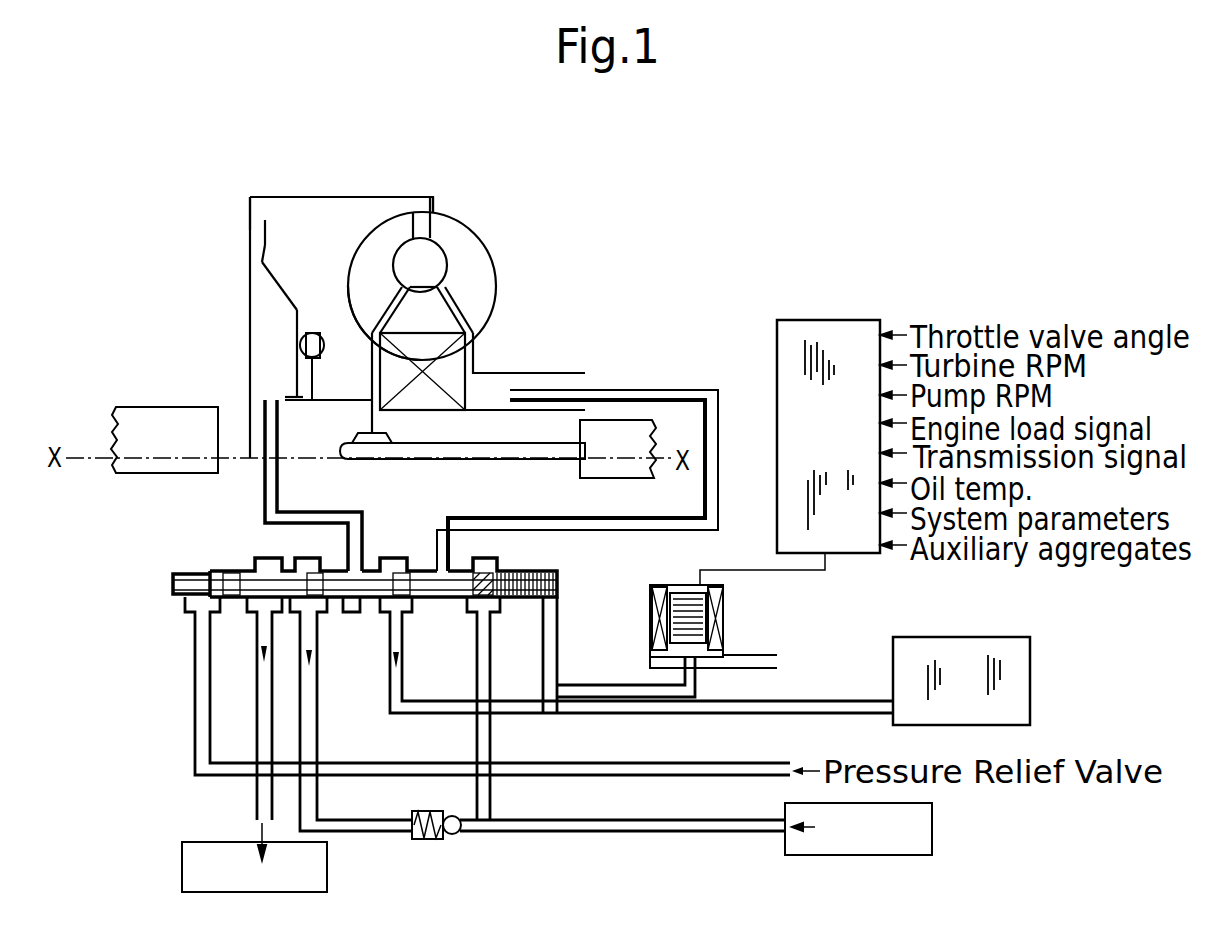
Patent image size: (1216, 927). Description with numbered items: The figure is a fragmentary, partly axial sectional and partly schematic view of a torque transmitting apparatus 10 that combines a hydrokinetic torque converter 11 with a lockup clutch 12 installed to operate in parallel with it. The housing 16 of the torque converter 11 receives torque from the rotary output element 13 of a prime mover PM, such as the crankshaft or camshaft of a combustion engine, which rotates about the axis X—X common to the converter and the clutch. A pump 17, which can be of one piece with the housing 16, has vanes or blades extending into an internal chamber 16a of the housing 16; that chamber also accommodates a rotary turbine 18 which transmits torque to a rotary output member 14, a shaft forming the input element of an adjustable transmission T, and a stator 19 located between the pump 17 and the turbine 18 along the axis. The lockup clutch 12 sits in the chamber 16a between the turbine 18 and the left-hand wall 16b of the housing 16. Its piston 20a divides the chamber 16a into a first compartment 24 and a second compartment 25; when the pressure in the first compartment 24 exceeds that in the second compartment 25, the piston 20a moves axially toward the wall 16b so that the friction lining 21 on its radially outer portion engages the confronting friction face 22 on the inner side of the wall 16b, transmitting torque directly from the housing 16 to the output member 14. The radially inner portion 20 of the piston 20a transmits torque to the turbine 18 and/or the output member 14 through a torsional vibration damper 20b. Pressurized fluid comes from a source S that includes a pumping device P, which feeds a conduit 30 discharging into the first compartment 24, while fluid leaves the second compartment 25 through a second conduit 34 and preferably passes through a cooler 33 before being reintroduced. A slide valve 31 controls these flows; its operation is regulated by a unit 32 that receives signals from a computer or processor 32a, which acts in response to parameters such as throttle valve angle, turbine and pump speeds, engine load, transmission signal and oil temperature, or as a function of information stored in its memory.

The torque transmitting apparatus 10 is at (472, 206).
The hydrokinetic torque converter 11 is at (432, 263).
The lockup clutch 12 is at (247, 205).
The rotary output element 13 is at (215, 455).
The rotary output member 14 is at (353, 437).
The housing 16 is at (313, 197).
The internal chamber 16a is at (421, 197).
The left-hand wall 16b is at (250, 227).
The pump 17 is at (477, 275).
The turbine 18 is at (385, 242).
The stator 19 is at (438, 323).
The radially inner portion 20 is at (296, 308).
The piston 20a is at (262, 255).
The torsional vibration damper 20b is at (307, 357).
The friction lining 21 is at (266, 238).
The friction face 22 is at (256, 267).
The first compartment 24 is at (330, 296).
The second compartment 25 is at (262, 337).
The conduit 30 is at (670, 392).
The slide valve 31 is at (402, 530).
The unit 32 is at (725, 623).
The processor 32a is at (857, 340).
The cooler 33 is at (947, 653).
The second conduit 34 is at (267, 493).
The adjustable transmission T is at (620, 420).
The source of hydraulic fluid S is at (205, 842).
The pumping device P is at (930, 833).
The prime mover PM is at (135, 467).